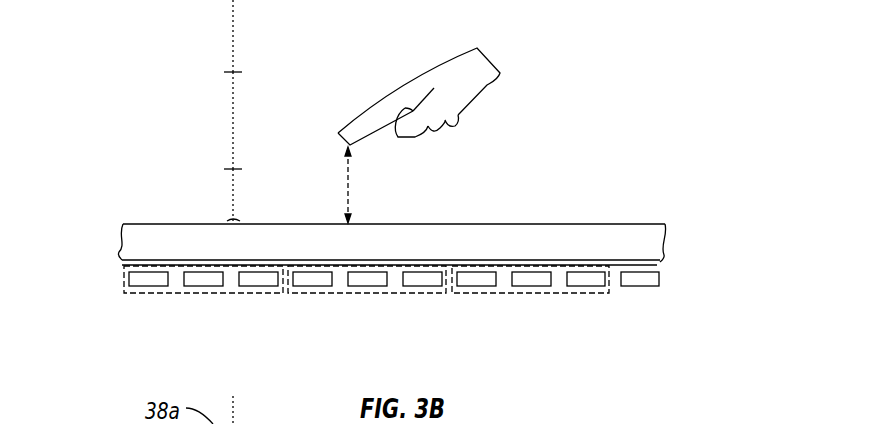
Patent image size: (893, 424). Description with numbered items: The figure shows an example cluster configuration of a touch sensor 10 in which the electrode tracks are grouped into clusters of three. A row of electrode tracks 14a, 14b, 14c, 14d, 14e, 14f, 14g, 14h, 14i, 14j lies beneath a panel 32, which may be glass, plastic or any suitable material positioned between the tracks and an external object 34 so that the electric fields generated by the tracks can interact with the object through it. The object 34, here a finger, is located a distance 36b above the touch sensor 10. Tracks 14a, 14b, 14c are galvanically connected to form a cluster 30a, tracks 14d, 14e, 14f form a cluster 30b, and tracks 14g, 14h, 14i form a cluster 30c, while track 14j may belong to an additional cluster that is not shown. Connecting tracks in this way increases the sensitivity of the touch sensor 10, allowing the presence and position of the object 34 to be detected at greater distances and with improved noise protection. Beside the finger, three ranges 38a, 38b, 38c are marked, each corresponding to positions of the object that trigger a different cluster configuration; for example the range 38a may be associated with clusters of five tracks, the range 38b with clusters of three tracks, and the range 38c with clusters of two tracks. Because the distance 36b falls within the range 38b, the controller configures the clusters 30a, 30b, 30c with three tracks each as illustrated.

The touch sensor 10 is at (713, 178).
The panel 32 is at (628, 243).
The object 34 is at (345, 127).
The distance 36b is at (352, 187).
The range 38a is at (231, 47).
The range 38b is at (231, 128).
The range 38c is at (231, 203).
The cluster 30a is at (122, 300).
The cluster 30b is at (387, 299).
The cluster 30c is at (553, 299).
The track 14a is at (149, 287).
The track 14b is at (204, 287).
The track 14c is at (259, 287).
The track 14d is at (313, 287).
The track 14e is at (368, 287).
The track 14f is at (423, 287).
The track 14g is at (477, 287).
The track 14h is at (532, 287).
The track 14i is at (587, 287).
The track 14j is at (641, 287).